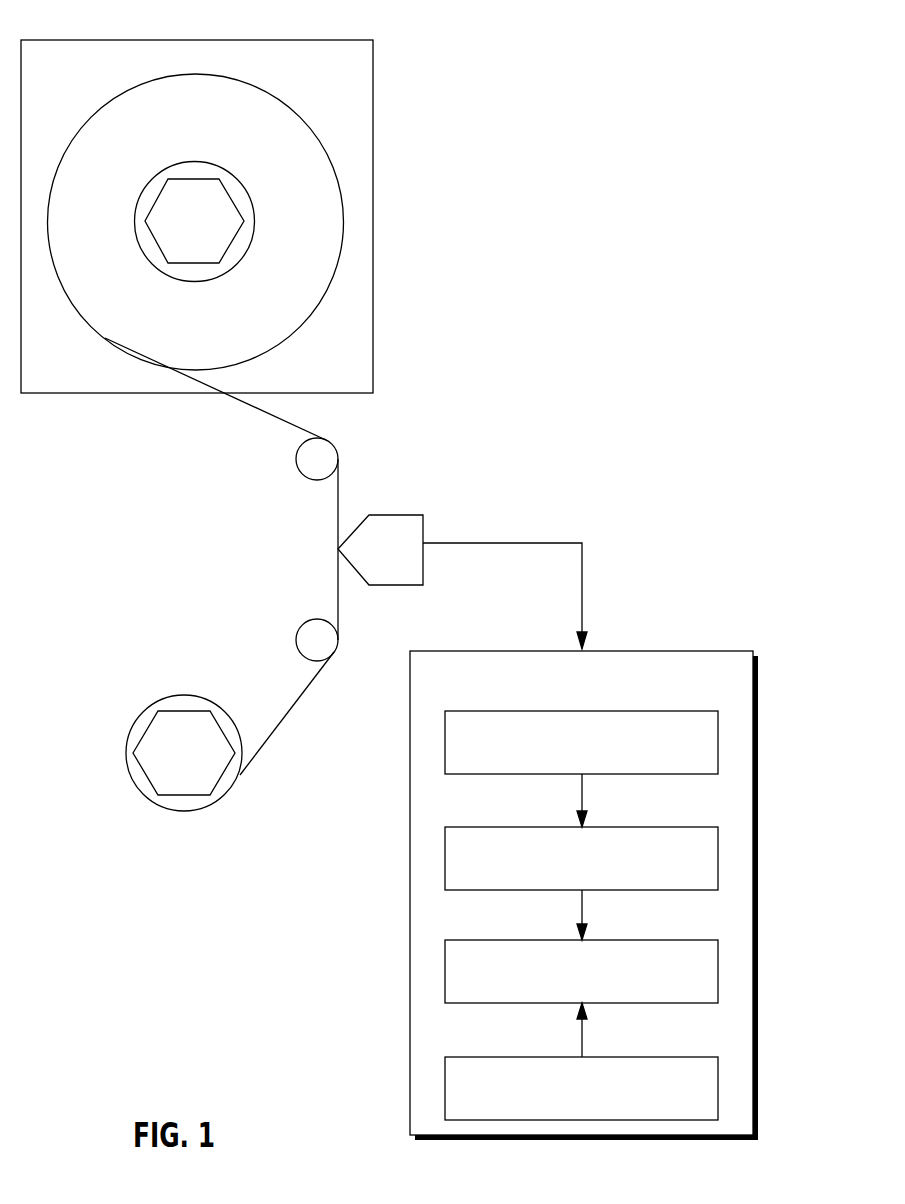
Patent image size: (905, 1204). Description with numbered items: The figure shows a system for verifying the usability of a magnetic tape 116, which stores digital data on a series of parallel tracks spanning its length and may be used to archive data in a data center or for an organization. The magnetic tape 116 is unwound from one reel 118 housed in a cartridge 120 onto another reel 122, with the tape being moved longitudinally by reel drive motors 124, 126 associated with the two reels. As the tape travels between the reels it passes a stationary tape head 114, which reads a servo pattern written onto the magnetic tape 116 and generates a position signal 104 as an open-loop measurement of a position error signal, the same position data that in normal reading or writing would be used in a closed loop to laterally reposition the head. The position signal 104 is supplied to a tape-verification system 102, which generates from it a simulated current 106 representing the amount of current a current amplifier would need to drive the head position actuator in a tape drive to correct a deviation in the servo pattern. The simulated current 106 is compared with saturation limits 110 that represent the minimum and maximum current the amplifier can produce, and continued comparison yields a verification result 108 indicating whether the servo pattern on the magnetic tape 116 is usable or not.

The tape-verification system 102 is at (565, 681).
The position signal 104 is at (565, 741).
The simulated current 106 is at (565, 856).
The verification result 108 is at (565, 969).
The saturation limits 110 is at (565, 1088).
The tape head 114 is at (371, 556).
The magnetic tape 116 is at (262, 410).
The reel 118 is at (113, 310).
The cartridge 120 is at (393, 40).
The reel 122 is at (190, 812).
The reel drive motor 124 is at (177, 229).
The reel drive motor 126 is at (167, 761).